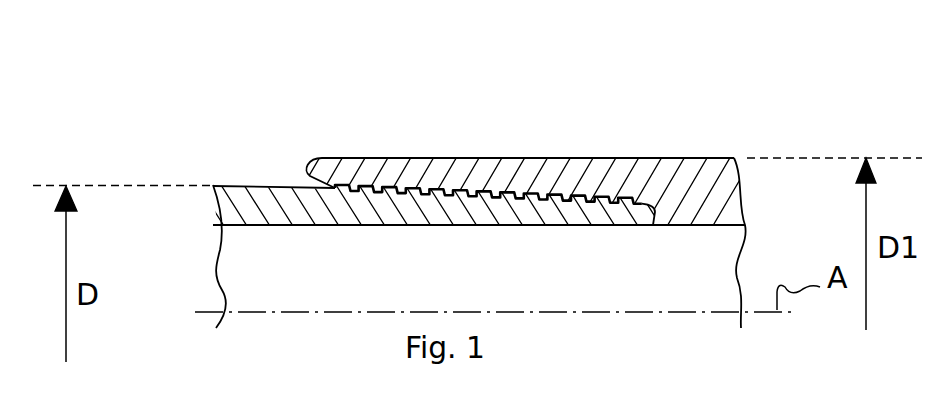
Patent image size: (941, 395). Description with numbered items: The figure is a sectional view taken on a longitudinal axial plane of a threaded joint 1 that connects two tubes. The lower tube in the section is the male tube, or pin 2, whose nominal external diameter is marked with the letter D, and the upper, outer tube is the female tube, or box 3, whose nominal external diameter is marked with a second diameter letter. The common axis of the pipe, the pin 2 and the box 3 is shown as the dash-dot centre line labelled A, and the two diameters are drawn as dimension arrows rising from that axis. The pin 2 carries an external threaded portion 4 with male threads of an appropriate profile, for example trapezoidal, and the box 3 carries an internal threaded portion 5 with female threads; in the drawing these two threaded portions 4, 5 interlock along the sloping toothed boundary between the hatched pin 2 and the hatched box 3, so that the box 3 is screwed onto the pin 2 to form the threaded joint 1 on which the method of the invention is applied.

The threaded joint 1 is at (760, 116).
The pin 2 is at (220, 213).
The box 3 is at (736, 173).
The threaded portion 4 is at (533, 199).
The internal threaded portion 5 is at (545, 194).